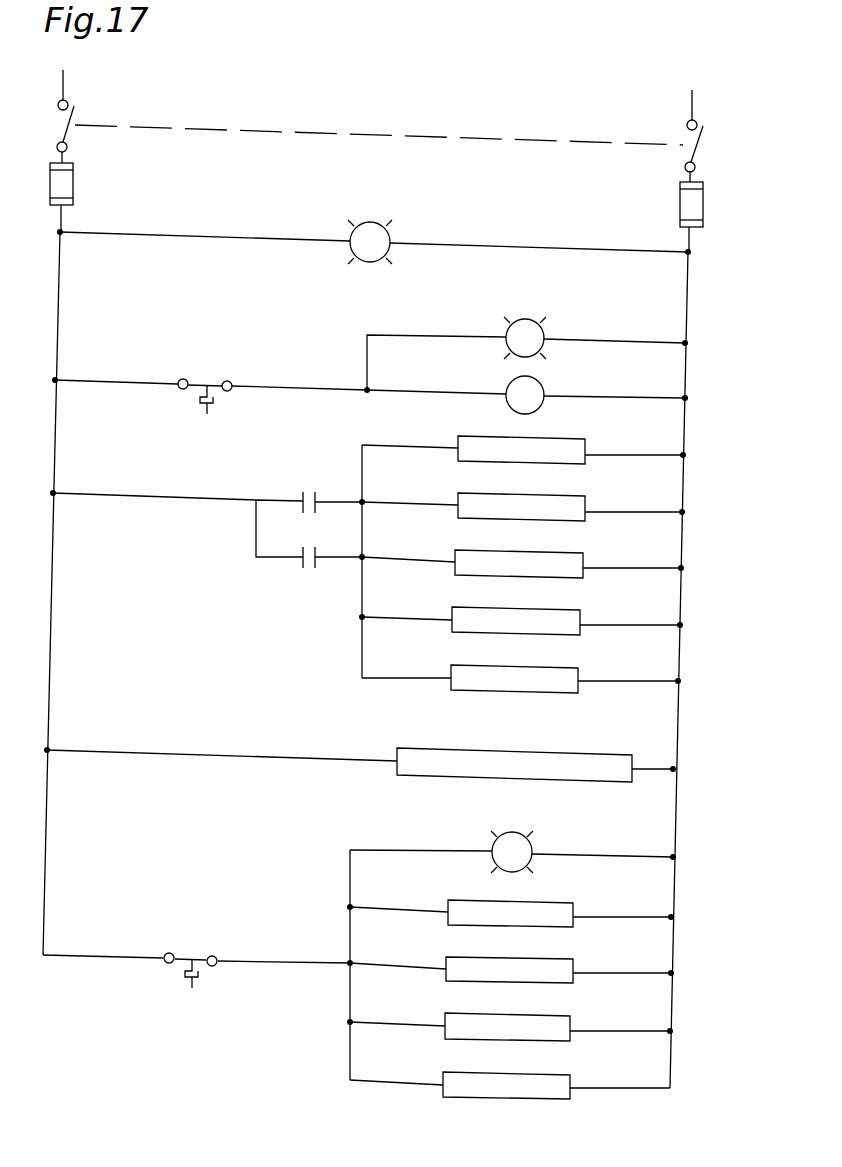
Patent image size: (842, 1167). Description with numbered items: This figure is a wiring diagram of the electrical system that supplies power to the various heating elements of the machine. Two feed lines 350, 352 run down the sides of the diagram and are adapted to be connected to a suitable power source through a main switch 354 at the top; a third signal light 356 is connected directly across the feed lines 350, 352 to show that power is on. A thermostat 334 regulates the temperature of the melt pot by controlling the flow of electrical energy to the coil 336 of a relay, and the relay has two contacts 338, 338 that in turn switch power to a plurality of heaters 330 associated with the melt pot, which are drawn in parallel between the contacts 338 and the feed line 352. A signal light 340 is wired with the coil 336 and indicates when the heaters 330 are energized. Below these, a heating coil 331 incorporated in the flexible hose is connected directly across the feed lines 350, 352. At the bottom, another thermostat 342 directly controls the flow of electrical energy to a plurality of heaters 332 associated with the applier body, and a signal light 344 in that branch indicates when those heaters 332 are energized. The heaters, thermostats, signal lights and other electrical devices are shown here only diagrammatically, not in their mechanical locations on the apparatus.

The heaters 330 is at (568, 437).
The heating coil 331 is at (580, 750).
The heaters 332 is at (565, 902).
The thermostat 334 is at (211, 382).
The coil 336 is at (511, 385).
The contacts 338 is at (302, 495).
The signal light 340 is at (539, 322).
The thermostat 342 is at (194, 956).
The signal light 344 is at (531, 840).
The feed line 350 is at (58, 291).
The feed line 352 is at (687, 292).
The main switch 354 is at (76, 108).
The signal light 356 is at (377, 221).